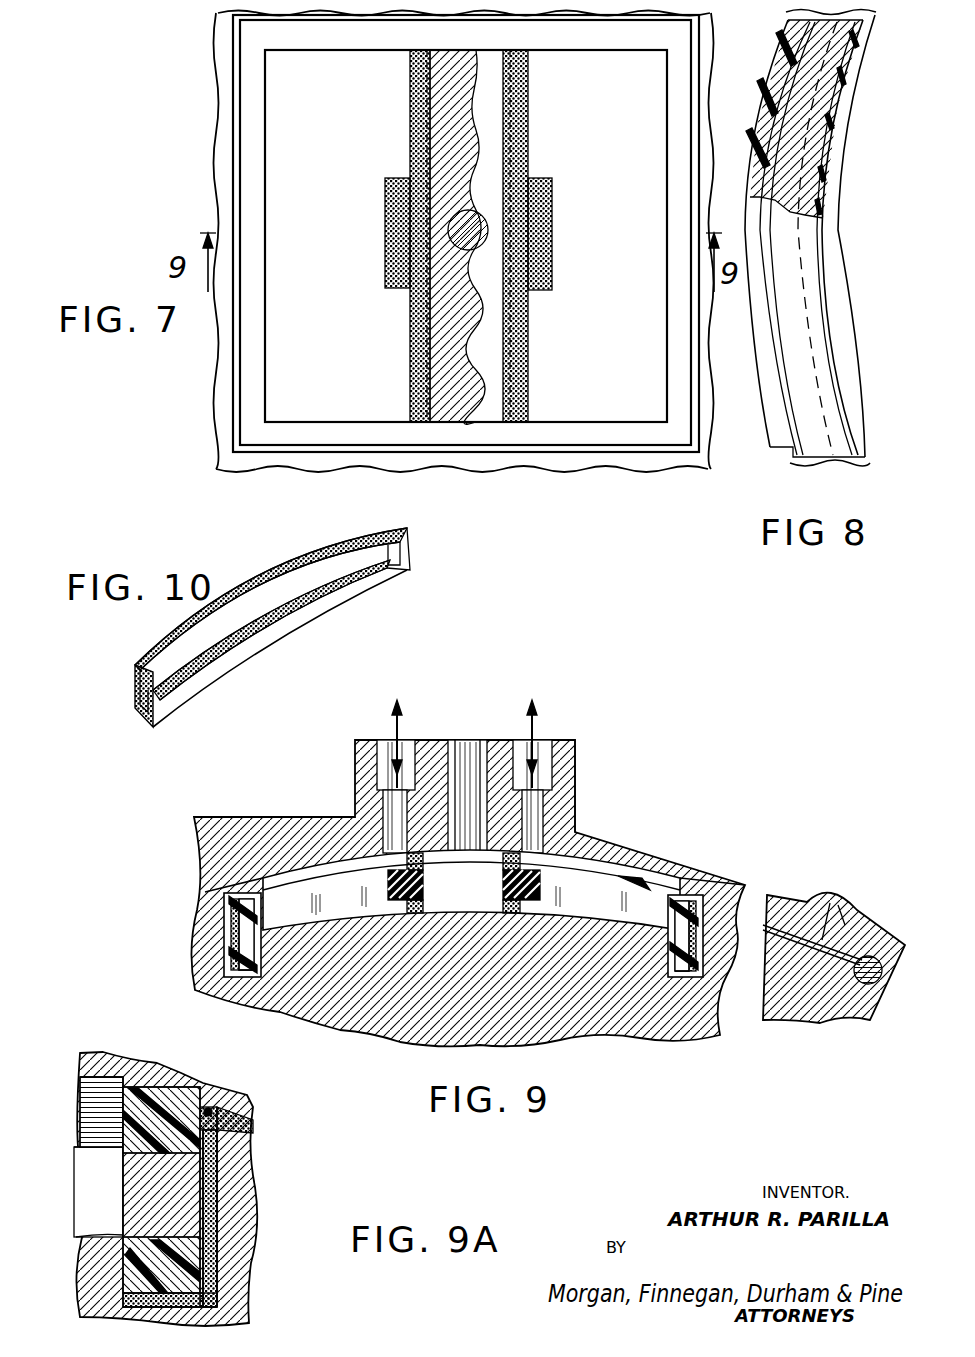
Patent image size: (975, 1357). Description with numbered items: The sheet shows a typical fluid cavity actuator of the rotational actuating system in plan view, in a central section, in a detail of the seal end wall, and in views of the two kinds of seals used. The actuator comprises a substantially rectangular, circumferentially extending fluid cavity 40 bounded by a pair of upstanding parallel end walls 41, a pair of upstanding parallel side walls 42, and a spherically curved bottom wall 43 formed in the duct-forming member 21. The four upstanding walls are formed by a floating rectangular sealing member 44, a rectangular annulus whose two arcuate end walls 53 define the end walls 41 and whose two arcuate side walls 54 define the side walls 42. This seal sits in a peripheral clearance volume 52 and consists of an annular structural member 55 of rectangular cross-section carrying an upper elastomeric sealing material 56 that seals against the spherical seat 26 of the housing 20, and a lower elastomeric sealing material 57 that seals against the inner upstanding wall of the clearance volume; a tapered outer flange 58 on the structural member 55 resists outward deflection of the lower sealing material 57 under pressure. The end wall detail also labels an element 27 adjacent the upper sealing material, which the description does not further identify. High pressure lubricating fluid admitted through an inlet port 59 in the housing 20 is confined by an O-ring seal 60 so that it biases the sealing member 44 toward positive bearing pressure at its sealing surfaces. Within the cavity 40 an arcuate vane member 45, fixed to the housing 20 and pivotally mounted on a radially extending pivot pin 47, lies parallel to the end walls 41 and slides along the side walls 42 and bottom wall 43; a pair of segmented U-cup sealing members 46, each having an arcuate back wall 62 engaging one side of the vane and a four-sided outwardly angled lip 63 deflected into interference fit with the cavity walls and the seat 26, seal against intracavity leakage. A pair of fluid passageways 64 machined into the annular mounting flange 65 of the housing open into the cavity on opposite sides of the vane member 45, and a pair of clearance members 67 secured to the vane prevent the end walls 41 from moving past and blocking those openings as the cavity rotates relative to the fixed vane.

In FIG. 9, the housing 20 is at (468, 906).
In FIG. 9A, the housing 20 is at (112, 1050).
In FIG. 9, the duct-forming member 21 is at (676, 1020).
In FIG. 9A, the duct-forming member 21 is at (262, 1225).
In FIG. 9, the spherical seat 26 is at (652, 884).
In FIG. 9A, the spherical seat 26 is at (80, 1085).
In FIG. 9A, the gasket lip 27 is at (232, 1130).
In FIG. 7, the fluid cavity 40 is at (280, 108).
In FIG. 7, the end walls 41 is at (667, 97).
In FIG. 9, the end walls 41 is at (262, 965).
In FIG. 9A, the end walls 41 is at (123, 1203).
In FIG. 7, the side walls 42 is at (614, 50).
In FIG. 9, the side walls 42 is at (293, 925).
In FIG. 9A, the side walls 42 is at (111, 1220).
In FIG. 7, the bottom wall 43 is at (333, 182).
In FIG. 9, the bottom wall 43 is at (325, 930).
In FIG. 9A, the bottom wall 43 is at (86, 1218).
In FIG. 7, the floating rectangular sealing member 44 is at (558, 455).
In FIG. 8, the floating rectangular sealing member 44 is at (768, 450).
In FIG. 9, the floating rectangular sealing member 44 is at (665, 985).
In FIG. 7, the vane member 45 is at (475, 132).
In FIG. 9, the vane member 45 is at (452, 905).
In FIG. 7, the sealing members 46 is at (408, 106).
In FIG. 10, the sealing members 46 is at (272, 619).
In FIG. 9, the sealing members 46 is at (416, 912).
In FIG. 7, the pivot pin 47 is at (460, 255).
In FIG. 9, the pivot pin 47 is at (465, 745).
In FIG. 9A, the peripheral clearance volume 52 is at (209, 1160).
In FIG. 7, the arcuate end walls 53 is at (260, 222).
In FIG. 7, the arcuate side walls 54 is at (478, 47).
In FIG. 8, the annular structural member 55 is at (818, 52).
In FIG. 9, the annular structural member 55 is at (690, 945).
In FIG. 9A, the annular structural member 55 is at (180, 1200).
In FIG. 8, the upper sealing material 56 is at (768, 70).
In FIG. 9, the upper sealing material 56 is at (690, 898).
In FIG. 9A, the upper sealing material 56 is at (140, 1105).
In FIG. 8, the lower sealing material 57 is at (823, 150).
In FIG. 9, the lower sealing material 57 is at (690, 972).
In FIG. 9A, the lower sealing material 57 is at (200, 1312).
In FIG. 9A, the flange 58 is at (185, 1258).
In FIG. 9, the inlet port 59 is at (832, 905).
In FIG. 9, the O-ring seal 60 is at (834, 960).
In FIG. 10, the back wall 62 is at (337, 568).
In FIG. 7, the lip 63 is at (415, 365).
In FIG. 10, the lip 63 is at (253, 587).
In FIG. 9, the fluid passageways 64 is at (390, 805).
In FIG. 9, the mounting flange 65 is at (570, 765).
In FIG. 7, the clearance members 67 is at (390, 272).
In FIG. 9, the clearance members 67 is at (392, 905).